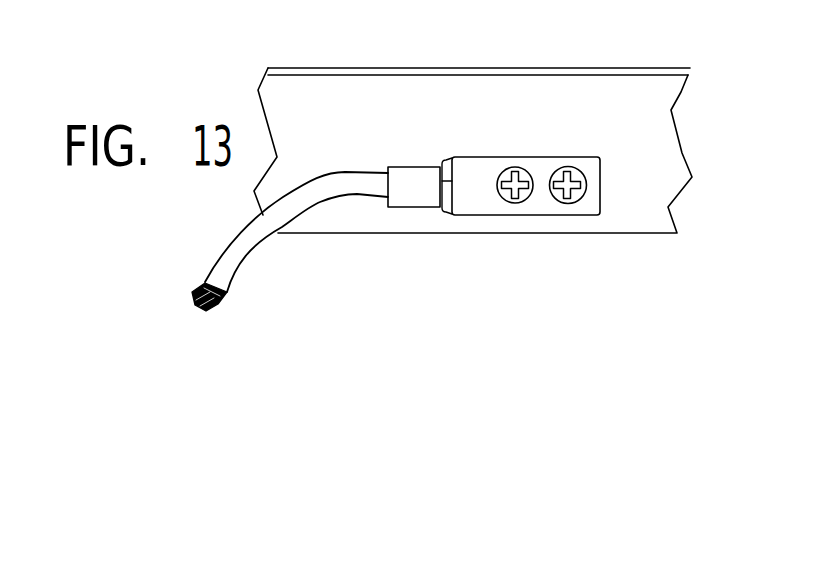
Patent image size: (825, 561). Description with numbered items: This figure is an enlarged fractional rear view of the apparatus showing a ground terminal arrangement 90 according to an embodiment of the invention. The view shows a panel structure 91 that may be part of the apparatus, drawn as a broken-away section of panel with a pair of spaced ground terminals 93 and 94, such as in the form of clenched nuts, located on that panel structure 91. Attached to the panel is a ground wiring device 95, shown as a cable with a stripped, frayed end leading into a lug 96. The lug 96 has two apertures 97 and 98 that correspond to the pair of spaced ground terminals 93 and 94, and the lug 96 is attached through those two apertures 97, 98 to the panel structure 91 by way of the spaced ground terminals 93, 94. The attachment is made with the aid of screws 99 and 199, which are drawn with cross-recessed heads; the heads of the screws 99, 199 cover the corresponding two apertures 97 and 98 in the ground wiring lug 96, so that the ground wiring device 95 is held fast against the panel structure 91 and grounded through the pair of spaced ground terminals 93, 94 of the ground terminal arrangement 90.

The ground terminal arrangement 90 is at (552, 157).
The panel structure 91 is at (657, 145).
The ground terminal 93 is at (570, 203).
The ground terminal 94 is at (513, 203).
The ground wiring device 95 is at (361, 199).
The lug 96 is at (470, 203).
The aperture 97 is at (578, 199).
The aperture 98 is at (519, 203).
The screw 99 is at (583, 171).
The screw 199 is at (521, 166).